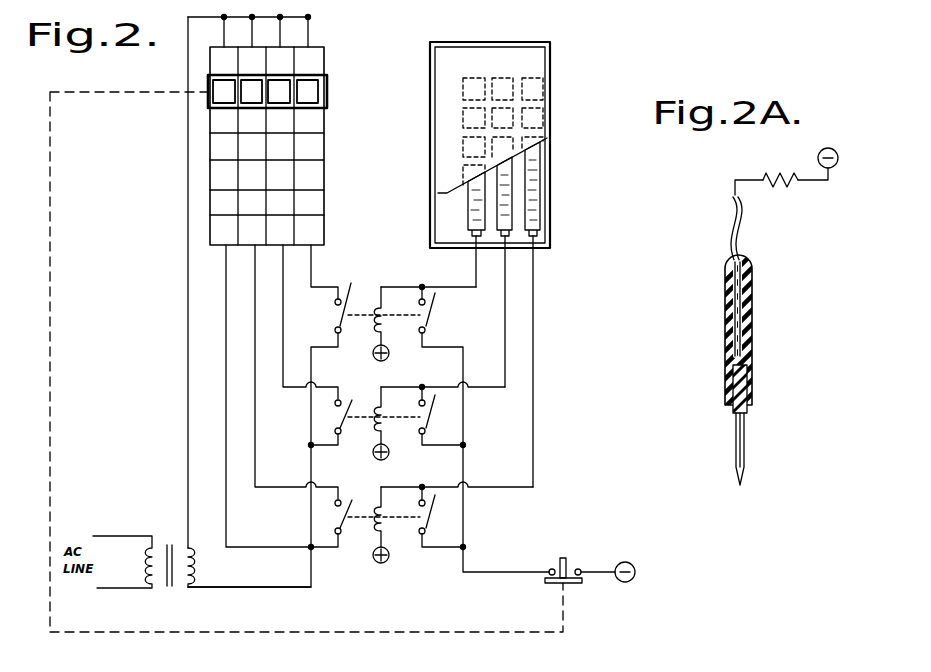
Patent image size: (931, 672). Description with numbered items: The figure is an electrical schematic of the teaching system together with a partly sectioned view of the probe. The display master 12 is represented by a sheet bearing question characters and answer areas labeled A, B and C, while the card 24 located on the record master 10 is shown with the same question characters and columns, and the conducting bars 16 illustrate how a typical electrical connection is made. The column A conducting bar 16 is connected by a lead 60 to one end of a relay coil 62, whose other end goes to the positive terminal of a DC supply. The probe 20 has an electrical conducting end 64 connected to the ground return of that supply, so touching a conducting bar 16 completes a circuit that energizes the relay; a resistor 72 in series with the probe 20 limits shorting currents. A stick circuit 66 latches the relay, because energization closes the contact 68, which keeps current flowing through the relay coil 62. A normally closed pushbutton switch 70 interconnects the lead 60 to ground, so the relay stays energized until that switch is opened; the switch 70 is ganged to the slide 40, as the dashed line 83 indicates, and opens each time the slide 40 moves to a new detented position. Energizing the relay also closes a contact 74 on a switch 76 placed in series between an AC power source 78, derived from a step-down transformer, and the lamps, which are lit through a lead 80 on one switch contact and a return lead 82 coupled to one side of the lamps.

In FIG. 2, the record master 10 is at (482, 128).
In FIG. 2, the display master 12 is at (335, 159).
In FIG. 2, the conducting bars 16 is at (473, 200).
In FIG. 2A, the probe 20 is at (725, 323).
In FIG. 2, the card 24 is at (448, 91).
In FIG. 2, the slide 40 is at (346, 72).
In FIG. 2, the lead 60 is at (463, 286).
In FIG. 2, the relay coil 62 is at (378, 304).
In FIG. 2A, the electrical conducting end 64 is at (736, 436).
In FIG. 2, the stick circuit 66 is at (444, 317).
In FIG. 2, the contact 68 is at (433, 301).
In FIG. 2, the pushbutton switch 70 is at (565, 557).
In FIG. 2A, the resistor 72 is at (785, 187).
In FIG. 2, the contact 74 is at (322, 293).
In FIG. 2, the switch 76 is at (328, 316).
In FIG. 2, the AC power source 78 is at (167, 535).
In FIG. 2, the lead 80 is at (238, 588).
In FIG. 2, the return lead 82 is at (188, 402).
In FIG. 2, the dashed line 83 is at (52, 318).